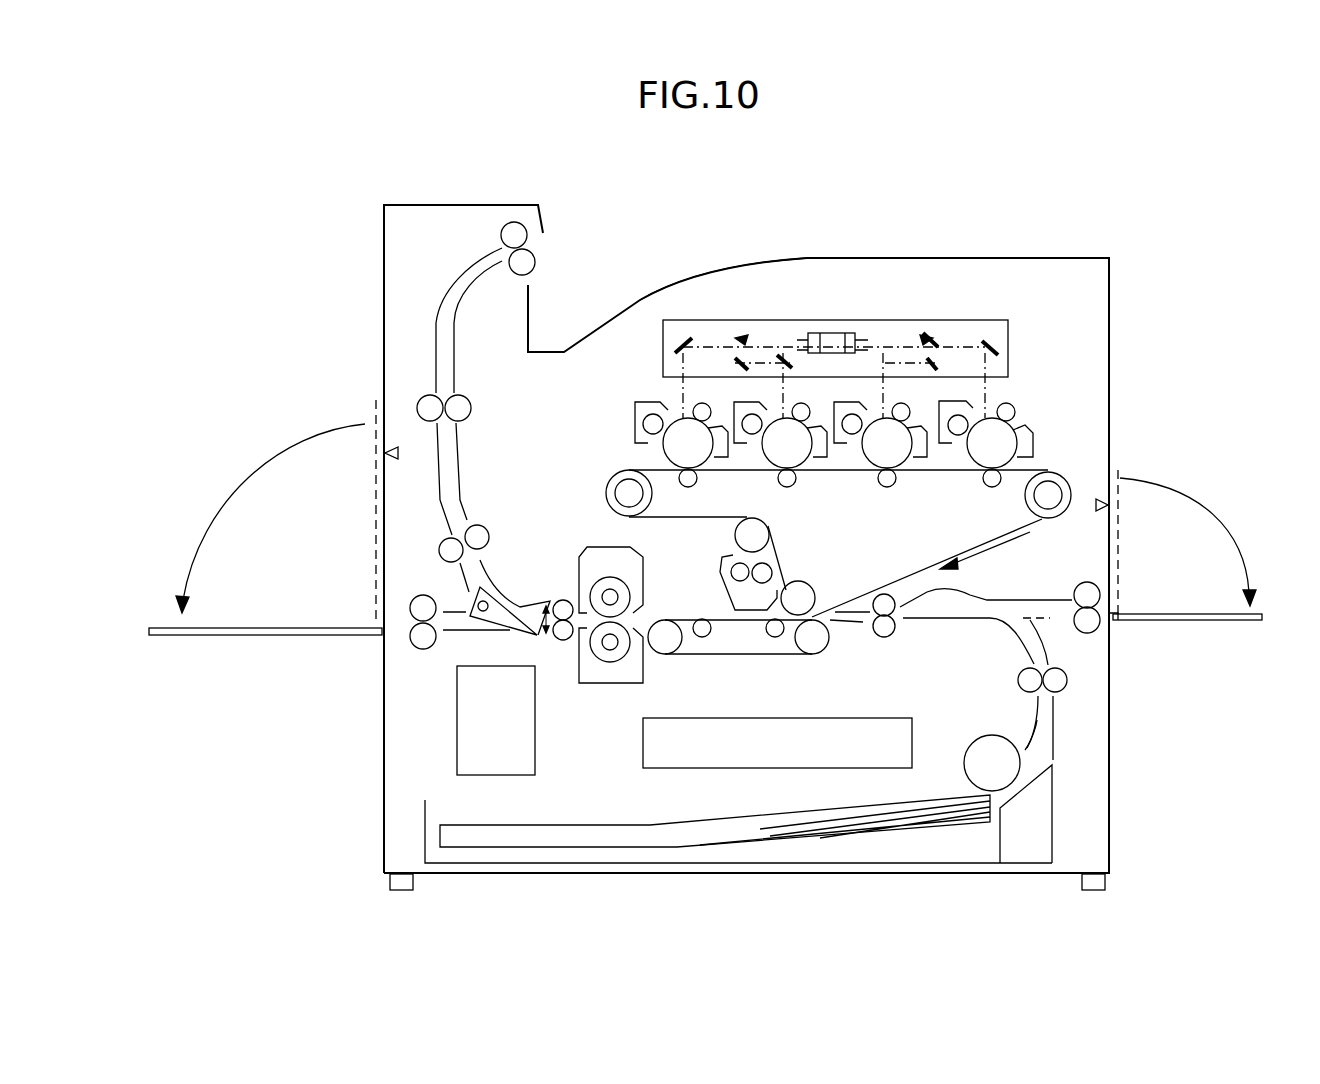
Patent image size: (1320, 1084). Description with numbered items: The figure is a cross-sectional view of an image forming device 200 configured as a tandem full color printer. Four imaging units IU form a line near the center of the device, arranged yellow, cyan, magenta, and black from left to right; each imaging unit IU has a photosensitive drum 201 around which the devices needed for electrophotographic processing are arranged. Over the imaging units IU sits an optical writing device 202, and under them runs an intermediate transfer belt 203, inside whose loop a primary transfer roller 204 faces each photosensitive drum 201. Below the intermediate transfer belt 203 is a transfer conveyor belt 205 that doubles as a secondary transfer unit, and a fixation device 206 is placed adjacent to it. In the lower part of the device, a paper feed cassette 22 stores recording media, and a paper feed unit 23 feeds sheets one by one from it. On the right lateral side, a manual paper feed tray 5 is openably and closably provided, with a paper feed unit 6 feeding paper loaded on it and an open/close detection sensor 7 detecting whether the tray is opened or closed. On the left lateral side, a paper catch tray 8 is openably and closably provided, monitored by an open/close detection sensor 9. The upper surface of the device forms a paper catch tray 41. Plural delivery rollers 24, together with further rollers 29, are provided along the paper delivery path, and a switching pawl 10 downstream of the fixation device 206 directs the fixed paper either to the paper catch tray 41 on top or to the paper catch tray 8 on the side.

The image forming device 200 is at (855, 174).
The paper catch tray 41 is at (752, 260).
The conveying rollers 29 is at (500, 236).
The delivery rollers 24 is at (472, 408).
The open/close detection sensor 9 is at (394, 466).
The open/close detection sensor 7 is at (1097, 492).
The paper catch tray 8 is at (254, 638).
The manual paper feed tray 5 is at (1190, 622).
The paper feed cassette 22 is at (420, 834).
The paper feed unit 23 is at (980, 738).
The paper feed unit 6 is at (1080, 583).
The switching pawl 10 is at (515, 598).
The fixation device 206 is at (597, 545).
The transfer conveyor belt 205 is at (735, 656).
The photosensitive drum 201 is at (970, 455).
The intermediate transfer belt 203 is at (905, 565).
The primary transfer roller 204 is at (878, 482).
The optical writing device 202 is at (978, 320).
The imaging unit IU is at (1019, 405).